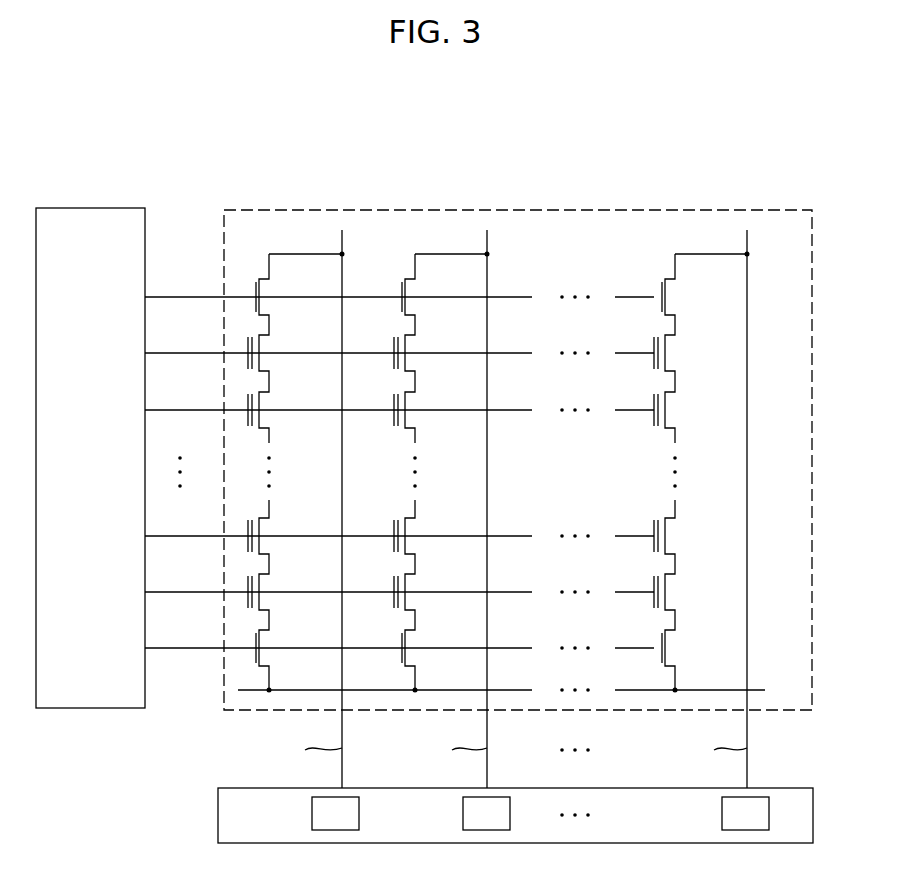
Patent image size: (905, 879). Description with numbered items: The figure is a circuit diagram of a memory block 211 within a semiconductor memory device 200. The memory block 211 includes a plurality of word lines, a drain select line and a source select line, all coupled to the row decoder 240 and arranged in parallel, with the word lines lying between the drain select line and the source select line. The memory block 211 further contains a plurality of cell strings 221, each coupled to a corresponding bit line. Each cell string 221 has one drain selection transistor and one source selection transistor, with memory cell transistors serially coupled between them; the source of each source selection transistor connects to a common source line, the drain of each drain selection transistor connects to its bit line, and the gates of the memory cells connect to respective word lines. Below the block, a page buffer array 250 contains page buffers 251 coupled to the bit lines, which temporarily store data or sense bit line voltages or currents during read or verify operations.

The memory device 200 is at (765, 126).
The memory block 211 is at (717, 209).
The cell string 221 is at (263, 250).
The row decoder 240 is at (92, 208).
The page buffer array 250 is at (218, 815).
The page buffer 251 is at (312, 815).